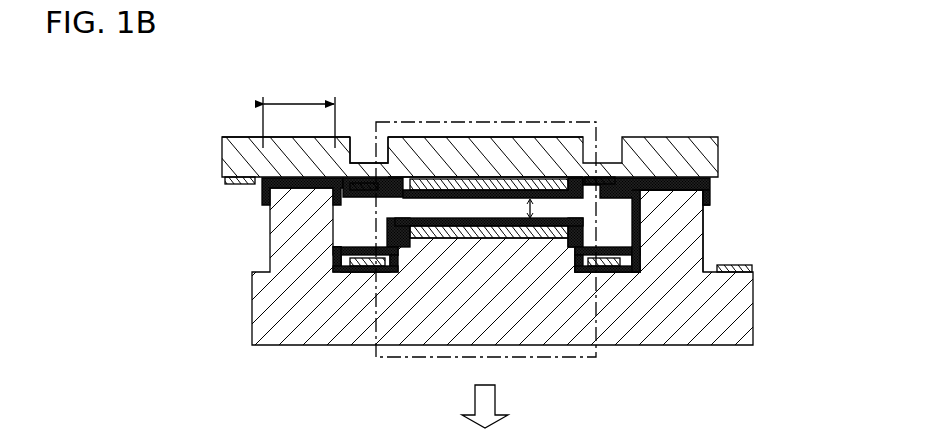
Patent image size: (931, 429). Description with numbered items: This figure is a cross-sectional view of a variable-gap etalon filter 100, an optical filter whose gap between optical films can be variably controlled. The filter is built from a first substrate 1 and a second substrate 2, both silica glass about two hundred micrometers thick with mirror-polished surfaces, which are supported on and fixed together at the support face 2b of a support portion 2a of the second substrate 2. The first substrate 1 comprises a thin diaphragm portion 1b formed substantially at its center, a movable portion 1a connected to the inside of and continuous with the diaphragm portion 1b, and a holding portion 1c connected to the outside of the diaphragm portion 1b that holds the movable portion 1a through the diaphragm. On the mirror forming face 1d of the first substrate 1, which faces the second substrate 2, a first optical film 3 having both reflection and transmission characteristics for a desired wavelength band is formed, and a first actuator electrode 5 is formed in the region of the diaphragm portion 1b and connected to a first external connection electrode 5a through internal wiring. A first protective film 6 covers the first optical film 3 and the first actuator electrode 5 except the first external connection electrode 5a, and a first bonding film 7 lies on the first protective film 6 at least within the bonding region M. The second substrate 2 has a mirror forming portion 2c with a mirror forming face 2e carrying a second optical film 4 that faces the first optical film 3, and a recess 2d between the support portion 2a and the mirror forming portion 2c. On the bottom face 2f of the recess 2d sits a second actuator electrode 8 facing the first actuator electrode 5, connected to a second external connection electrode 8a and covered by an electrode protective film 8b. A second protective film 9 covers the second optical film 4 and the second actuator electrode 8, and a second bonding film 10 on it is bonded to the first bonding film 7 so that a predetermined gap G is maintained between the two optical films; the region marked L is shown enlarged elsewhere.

The variable-gap etalon filter 100 is at (740, 71).
The first substrate 1 is at (712, 150).
The movable portion 1a is at (462, 160).
The diaphragm portion 1b is at (370, 163).
The holding portion 1c is at (240, 160).
The mirror forming face 1d is at (436, 185).
The second substrate 2 is at (740, 312).
The support portion 2a is at (700, 228).
The support face 2b is at (668, 186).
The mirror forming portion 2c is at (432, 250).
The recess 2d is at (338, 256).
The mirror forming face 2e is at (497, 229).
The bottom face 2f is at (399, 268).
The first optical film 3 is at (548, 188).
The second optical film 4 is at (512, 240).
The first actuator electrode 5 is at (348, 204).
The first external connection electrode 5a is at (235, 186).
The first protective film 6 is at (385, 225).
The first bonding film 7 is at (706, 181).
The second actuator electrode 8 is at (597, 275).
The second external connection electrode 8a is at (740, 256).
The electrode protective film 8b is at (603, 276).
The second protective film 9 is at (615, 276).
The second bonding film 10 is at (708, 190).
The bonding region M is at (299, 111).
The gap G is at (536, 208).
The portion L is at (586, 120).